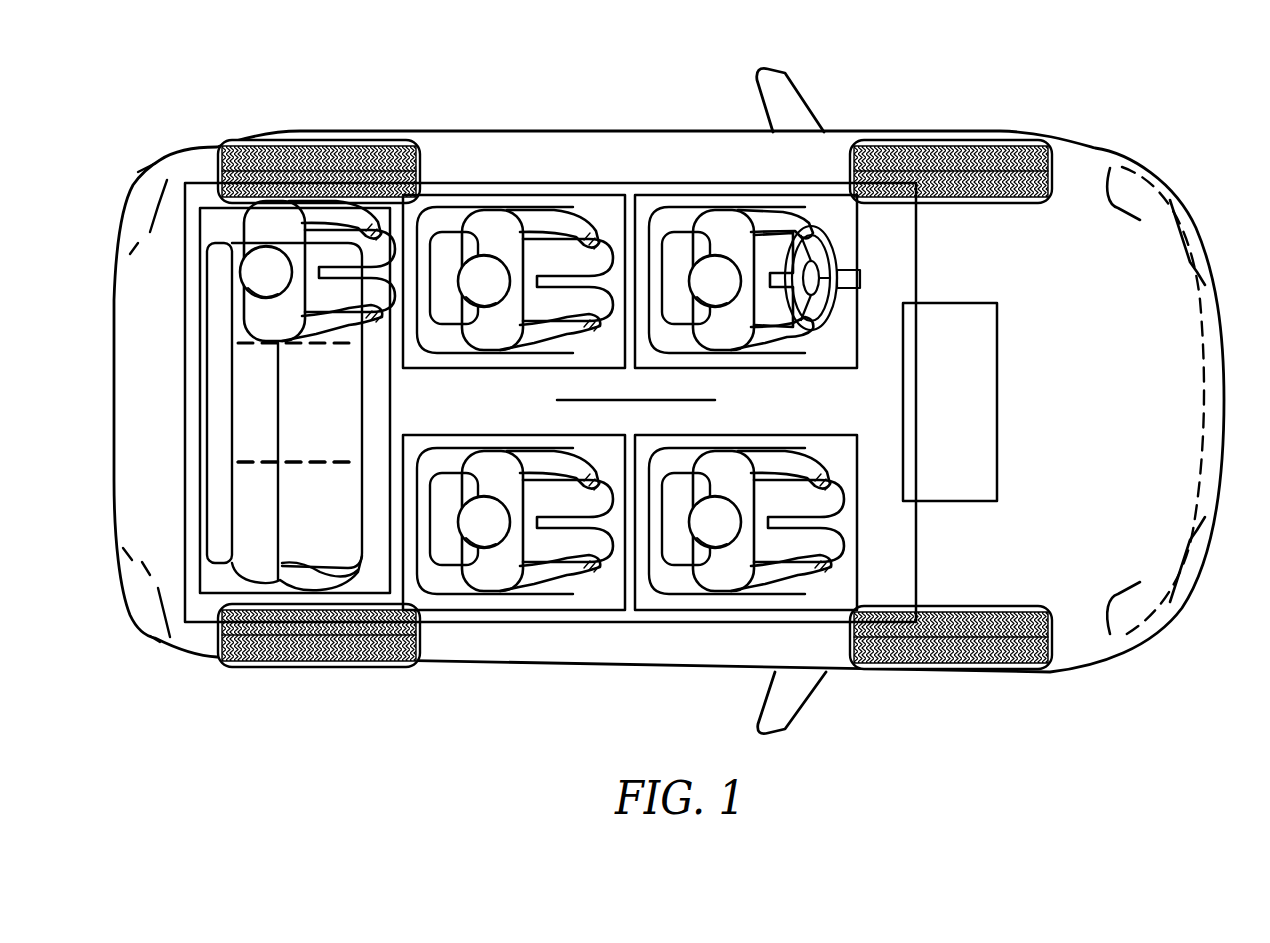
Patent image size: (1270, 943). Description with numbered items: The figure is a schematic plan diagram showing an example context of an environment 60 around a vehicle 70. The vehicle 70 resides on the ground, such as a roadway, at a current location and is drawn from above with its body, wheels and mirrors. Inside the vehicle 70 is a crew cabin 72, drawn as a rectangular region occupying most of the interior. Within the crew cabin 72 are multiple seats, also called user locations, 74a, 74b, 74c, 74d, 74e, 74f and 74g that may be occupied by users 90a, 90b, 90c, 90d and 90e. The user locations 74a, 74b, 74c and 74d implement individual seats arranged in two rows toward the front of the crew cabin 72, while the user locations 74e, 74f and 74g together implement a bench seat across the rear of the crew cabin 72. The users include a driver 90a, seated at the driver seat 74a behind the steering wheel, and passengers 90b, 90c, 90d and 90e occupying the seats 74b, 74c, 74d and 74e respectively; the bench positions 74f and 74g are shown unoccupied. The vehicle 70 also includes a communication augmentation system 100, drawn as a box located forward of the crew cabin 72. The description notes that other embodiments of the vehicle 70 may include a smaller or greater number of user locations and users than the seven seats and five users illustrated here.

The environment 60 is at (965, 90).
The vehicle 70 is at (1105, 148).
The crew cabin 72 is at (917, 555).
The seat 74a is at (735, 195).
The seat 74b is at (735, 612).
The seat 74c is at (535, 195).
The seat 74d is at (533, 612).
The seat 74e is at (238, 318).
The seat 74f is at (298, 405).
The seat 74g is at (298, 525).
The driver 90a is at (713, 240).
The passenger 90b is at (715, 565).
The passenger 90c is at (488, 240).
The passenger 90d is at (488, 565).
The passenger 90e is at (272, 237).
The communication augmentation system 100 is at (960, 405).